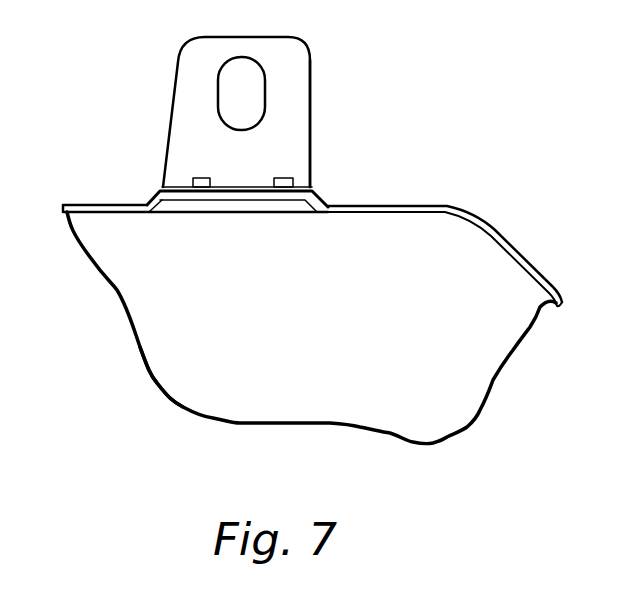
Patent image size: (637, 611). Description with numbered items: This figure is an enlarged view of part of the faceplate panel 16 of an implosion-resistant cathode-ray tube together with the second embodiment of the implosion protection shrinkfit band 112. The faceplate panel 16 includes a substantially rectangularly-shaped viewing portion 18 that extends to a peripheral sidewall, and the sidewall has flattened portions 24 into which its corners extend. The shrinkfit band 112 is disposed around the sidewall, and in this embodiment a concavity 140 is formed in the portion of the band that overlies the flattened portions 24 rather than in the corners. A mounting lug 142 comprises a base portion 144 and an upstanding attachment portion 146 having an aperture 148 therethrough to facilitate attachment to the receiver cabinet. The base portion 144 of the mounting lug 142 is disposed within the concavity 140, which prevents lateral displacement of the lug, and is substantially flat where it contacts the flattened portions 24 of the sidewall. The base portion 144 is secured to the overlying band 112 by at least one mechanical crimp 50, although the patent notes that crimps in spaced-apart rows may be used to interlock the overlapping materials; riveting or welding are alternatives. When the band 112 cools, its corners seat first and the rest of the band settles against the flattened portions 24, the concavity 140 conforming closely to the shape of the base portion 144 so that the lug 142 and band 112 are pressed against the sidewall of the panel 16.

The faceplate panel 16 is at (139, 341).
The viewing portion 18 is at (197, 370).
The flattened portions 24 is at (195, 213).
The mechanical crimp 50 is at (195, 178).
The implosion protection shrinkfit band 112 is at (420, 207).
The concavity 140 is at (147, 202).
The mounting lug 142 is at (363, 50).
The base portion 144 is at (280, 201).
The upstanding attachment portion 146 is at (287, 115).
The aperture 148 is at (238, 92).